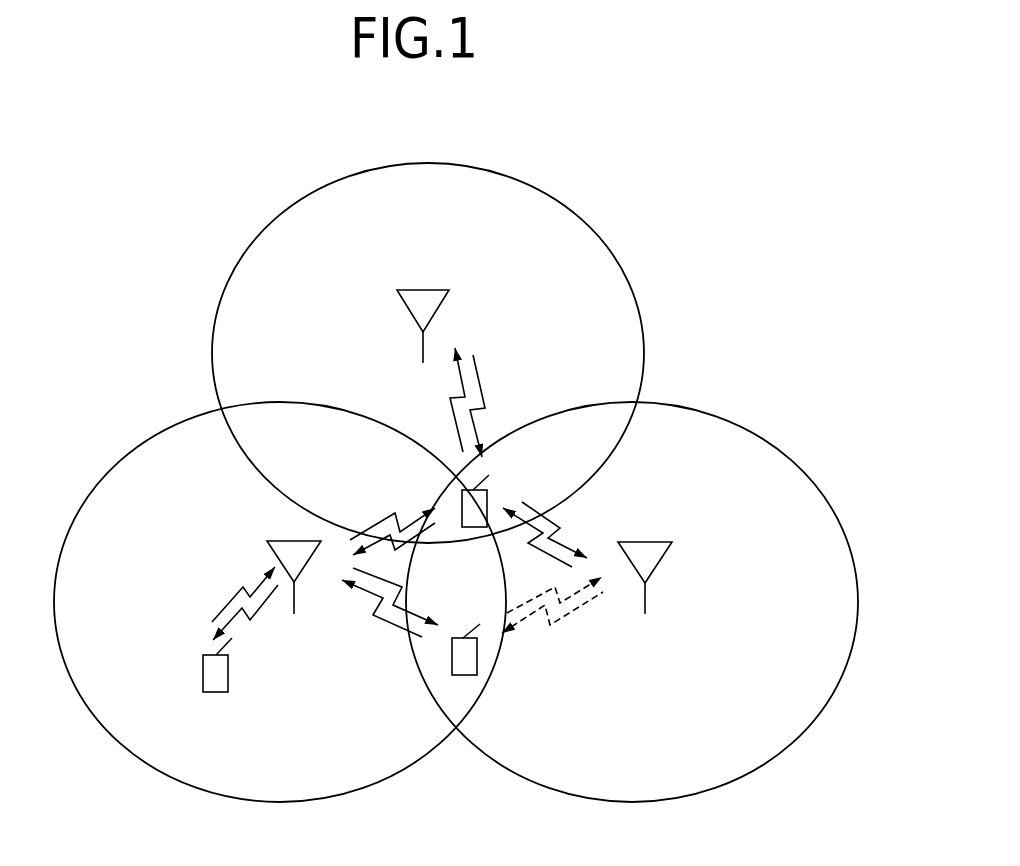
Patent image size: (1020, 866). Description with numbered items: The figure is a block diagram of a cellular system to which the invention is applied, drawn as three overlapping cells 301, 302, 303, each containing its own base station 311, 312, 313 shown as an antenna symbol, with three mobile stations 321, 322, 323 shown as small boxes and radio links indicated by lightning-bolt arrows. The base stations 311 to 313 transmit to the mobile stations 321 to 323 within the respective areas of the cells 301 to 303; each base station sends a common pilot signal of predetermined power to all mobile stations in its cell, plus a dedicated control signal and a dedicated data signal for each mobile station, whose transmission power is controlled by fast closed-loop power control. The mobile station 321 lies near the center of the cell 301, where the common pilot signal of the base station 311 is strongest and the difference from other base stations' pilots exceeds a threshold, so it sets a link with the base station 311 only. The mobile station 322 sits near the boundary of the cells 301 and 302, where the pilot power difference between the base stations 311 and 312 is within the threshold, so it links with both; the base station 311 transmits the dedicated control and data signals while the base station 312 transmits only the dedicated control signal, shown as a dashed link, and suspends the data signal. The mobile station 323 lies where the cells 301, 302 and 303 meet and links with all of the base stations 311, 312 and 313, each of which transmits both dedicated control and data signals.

The cell 301 is at (125, 455).
The cell 302 is at (770, 443).
The cell 303 is at (628, 278).
The base station 311 is at (283, 541).
The base station 312 is at (660, 557).
The base station 313 is at (428, 288).
The mobile station 321 is at (208, 692).
The mobile station 322 is at (478, 655).
The mobile station 323 is at (488, 490).